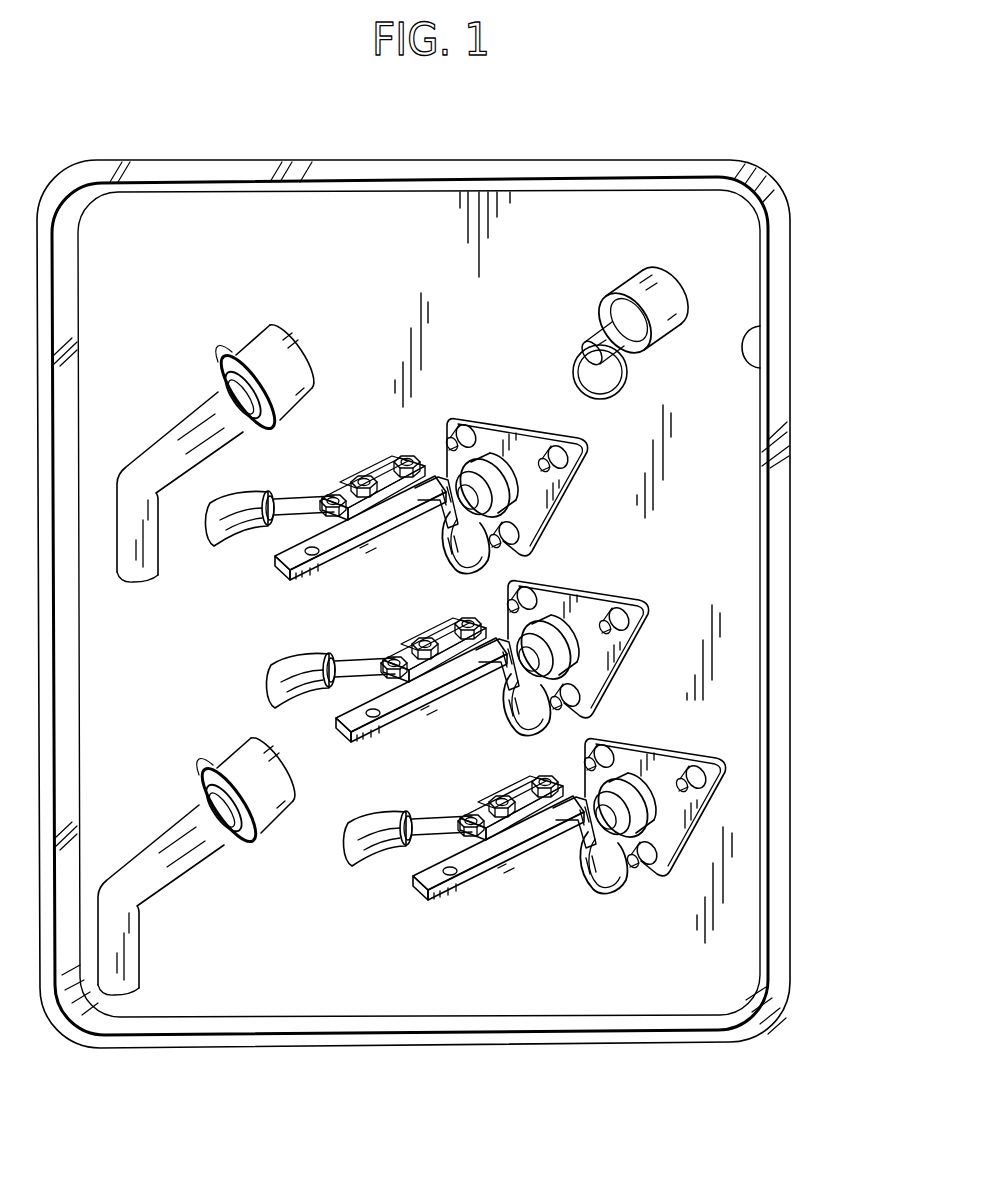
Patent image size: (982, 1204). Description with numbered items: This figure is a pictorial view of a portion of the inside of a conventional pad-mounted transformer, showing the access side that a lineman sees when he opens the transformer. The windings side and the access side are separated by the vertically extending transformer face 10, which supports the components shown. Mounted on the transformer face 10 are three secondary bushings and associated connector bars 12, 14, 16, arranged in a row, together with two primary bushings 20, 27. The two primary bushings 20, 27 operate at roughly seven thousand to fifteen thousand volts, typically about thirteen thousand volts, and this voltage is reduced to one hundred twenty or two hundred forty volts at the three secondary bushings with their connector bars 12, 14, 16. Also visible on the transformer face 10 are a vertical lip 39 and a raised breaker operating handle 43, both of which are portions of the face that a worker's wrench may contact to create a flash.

The transformer face 10 is at (737, 540).
The secondary bushing and associated connector bar 12 is at (297, 570).
The secondary bushing and associated connector bar 14 is at (372, 740).
The secondary bushing and associated connector bar 16 is at (473, 888).
The primary bushing 20 is at (263, 352).
The primary bushing 27 is at (247, 762).
The vertical lip 39 is at (765, 366).
The raised breaker operating handle 43 is at (630, 337).